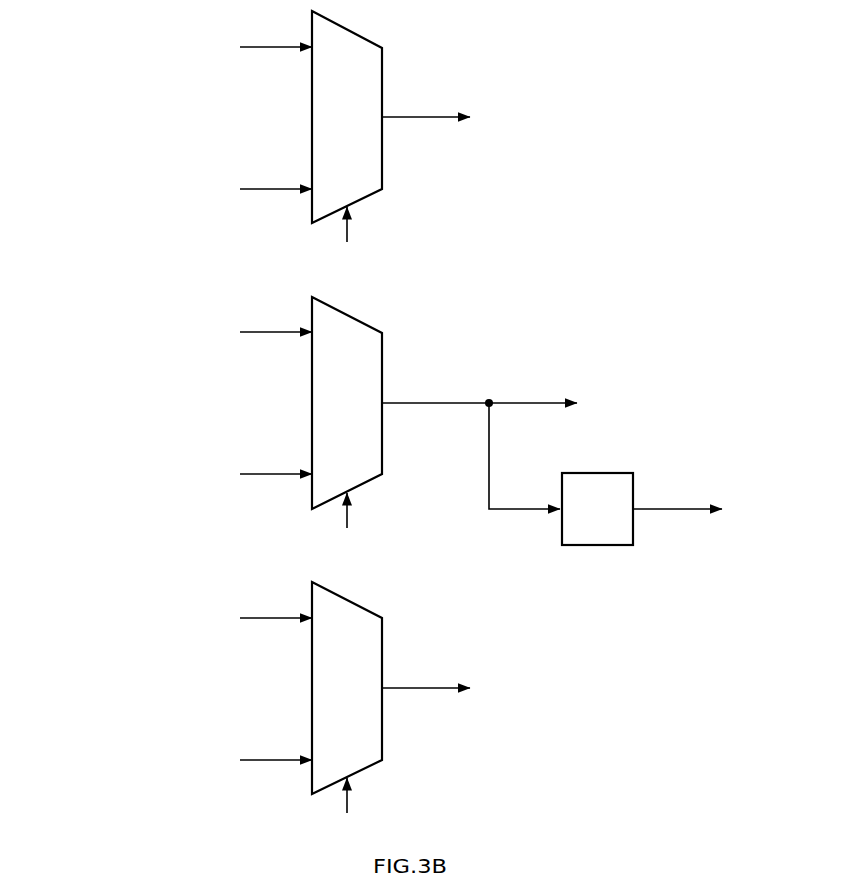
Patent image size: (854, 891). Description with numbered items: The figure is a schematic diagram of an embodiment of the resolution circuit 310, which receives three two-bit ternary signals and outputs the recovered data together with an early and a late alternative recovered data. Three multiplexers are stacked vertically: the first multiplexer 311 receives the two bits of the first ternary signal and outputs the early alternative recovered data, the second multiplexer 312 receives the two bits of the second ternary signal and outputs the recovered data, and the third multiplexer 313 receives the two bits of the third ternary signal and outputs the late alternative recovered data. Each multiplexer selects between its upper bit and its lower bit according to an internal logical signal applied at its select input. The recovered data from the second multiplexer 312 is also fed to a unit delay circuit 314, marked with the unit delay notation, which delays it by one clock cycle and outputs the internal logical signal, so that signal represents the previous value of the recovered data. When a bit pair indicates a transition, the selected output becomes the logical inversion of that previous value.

The resolution circuit 310 is at (94, 764).
The first multiplexer 311 is at (368, 34).
The second multiplexer 312 is at (368, 320).
The third multiplexer 313 is at (364, 604).
The unit delay circuit 314 is at (613, 473).